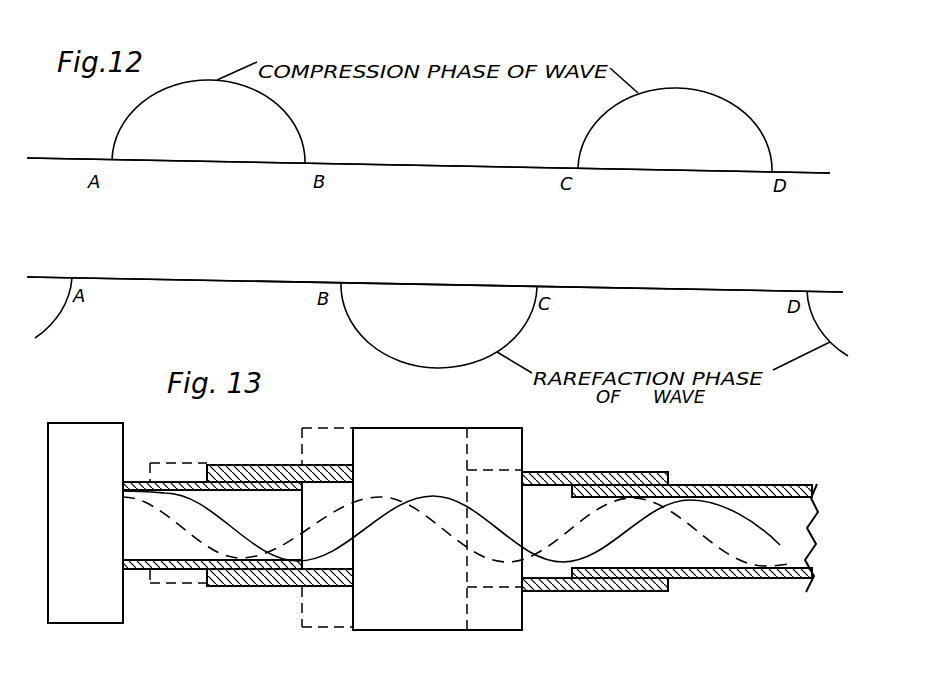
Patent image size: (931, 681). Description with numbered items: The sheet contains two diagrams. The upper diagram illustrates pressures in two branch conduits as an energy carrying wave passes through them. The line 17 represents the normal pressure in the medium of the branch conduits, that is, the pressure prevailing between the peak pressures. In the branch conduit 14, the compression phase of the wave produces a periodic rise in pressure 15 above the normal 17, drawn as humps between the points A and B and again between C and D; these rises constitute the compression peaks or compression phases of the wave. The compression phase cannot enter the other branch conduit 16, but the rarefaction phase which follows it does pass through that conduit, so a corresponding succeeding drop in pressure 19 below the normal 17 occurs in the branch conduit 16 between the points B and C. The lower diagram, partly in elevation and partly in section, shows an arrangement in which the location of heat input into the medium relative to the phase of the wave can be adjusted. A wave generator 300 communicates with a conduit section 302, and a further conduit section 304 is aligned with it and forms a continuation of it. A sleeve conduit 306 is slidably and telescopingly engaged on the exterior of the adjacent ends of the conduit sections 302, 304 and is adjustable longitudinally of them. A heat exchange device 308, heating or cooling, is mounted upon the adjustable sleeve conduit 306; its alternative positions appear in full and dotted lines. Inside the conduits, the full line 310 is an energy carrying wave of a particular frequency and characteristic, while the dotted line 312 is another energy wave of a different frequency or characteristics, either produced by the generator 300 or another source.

In FIG. 12, the branch conduit 14 is at (66, 157).
In FIG. 12, the curve representing compression-phase pressures 15 is at (288, 120).
In FIG. 12, the branch conduit 16 is at (136, 282).
In FIG. 12, the normal pressure line 17 is at (523, 168).
In FIG. 12, the curve representing rarefaction-phase pressures 19 is at (372, 342).
In FIG. 13, the wave generator 300 is at (70, 430).
In FIG. 13, the conduit section 302 is at (128, 480).
In FIG. 13, the conduit section 304 is at (688, 491).
In FIG. 13, the sleeve conduit 306 is at (593, 588).
In FIG. 13, the heat exchange device 308 is at (477, 620).
In FIG. 13, the energy carrying wave 310 is at (428, 496).
In FIG. 13, the energy wave 312 is at (203, 462).